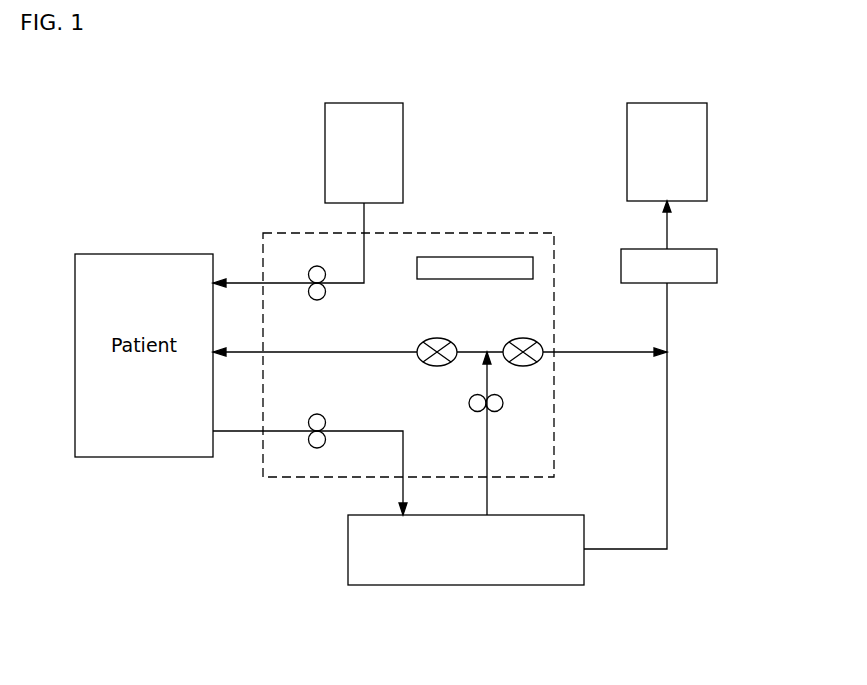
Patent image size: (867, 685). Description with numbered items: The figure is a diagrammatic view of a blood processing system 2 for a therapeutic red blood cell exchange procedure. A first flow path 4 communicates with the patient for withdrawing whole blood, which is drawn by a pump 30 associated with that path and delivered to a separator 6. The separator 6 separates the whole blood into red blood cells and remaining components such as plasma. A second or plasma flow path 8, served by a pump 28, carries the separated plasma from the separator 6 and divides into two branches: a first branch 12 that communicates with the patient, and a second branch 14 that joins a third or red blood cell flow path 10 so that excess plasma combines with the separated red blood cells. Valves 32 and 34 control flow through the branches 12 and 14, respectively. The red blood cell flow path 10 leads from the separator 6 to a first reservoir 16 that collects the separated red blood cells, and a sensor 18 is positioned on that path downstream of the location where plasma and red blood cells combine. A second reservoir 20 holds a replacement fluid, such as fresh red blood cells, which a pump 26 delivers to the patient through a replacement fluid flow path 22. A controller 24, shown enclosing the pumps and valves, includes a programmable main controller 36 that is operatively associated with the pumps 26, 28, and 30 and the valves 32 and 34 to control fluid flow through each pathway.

The system 2 is at (108, 210).
The first flow path 4 is at (253, 432).
The separator 6 is at (416, 585).
The second or plasma flow path 8 is at (488, 465).
The third or red blood cell flow path 10 is at (658, 549).
The first branch 12 is at (364, 352).
The second branch 14 is at (571, 352).
The first container or reservoir 16 is at (707, 163).
The sensor 18 is at (718, 281).
The second reservoir 20 is at (325, 172).
The replacement fluid flow path 22 is at (246, 283).
The controller or flow controller 24 is at (422, 233).
The pump 26 is at (327, 286).
The pump 28 is at (488, 395).
The pump 30 is at (327, 443).
The valve 32 is at (446, 338).
The valve 34 is at (523, 338).
The main controller 36 is at (518, 257).